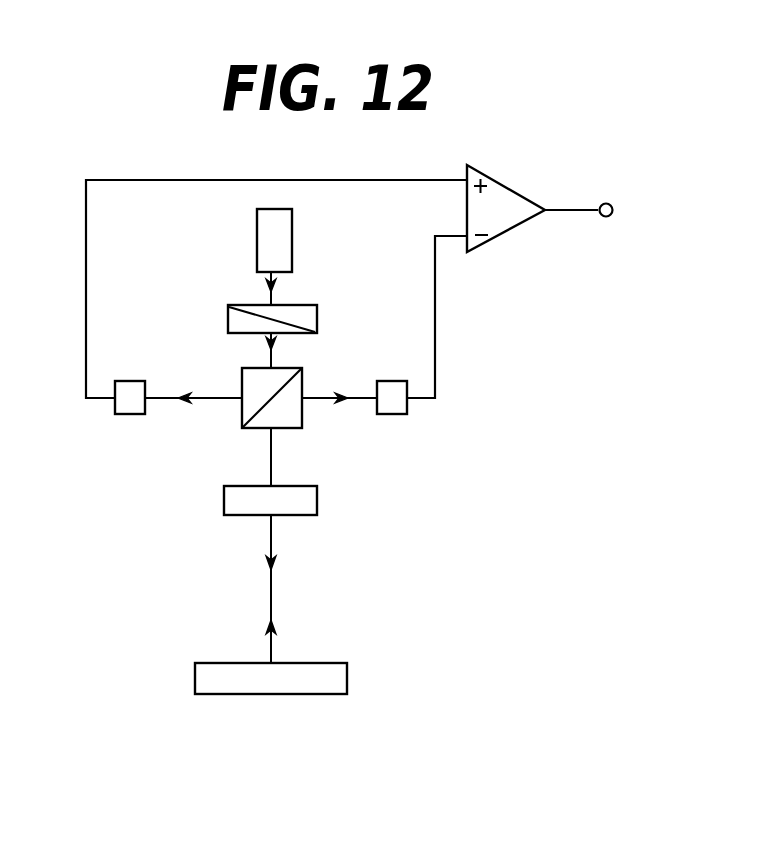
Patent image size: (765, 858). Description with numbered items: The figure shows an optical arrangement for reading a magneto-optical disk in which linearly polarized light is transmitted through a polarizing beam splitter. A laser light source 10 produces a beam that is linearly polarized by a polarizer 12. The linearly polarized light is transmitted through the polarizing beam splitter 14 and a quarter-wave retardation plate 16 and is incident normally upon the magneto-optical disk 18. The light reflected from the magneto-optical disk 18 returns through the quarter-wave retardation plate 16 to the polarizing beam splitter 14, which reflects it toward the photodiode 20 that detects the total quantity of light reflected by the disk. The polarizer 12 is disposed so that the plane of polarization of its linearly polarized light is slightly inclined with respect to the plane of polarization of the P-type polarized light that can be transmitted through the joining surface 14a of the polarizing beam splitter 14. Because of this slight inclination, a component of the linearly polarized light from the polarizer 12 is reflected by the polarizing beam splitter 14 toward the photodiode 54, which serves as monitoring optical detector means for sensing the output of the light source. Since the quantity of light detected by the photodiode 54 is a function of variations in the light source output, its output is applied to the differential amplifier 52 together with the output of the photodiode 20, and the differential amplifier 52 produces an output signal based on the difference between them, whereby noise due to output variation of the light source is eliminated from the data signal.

The laser light source 10 is at (267, 238).
The polarizer 12 is at (233, 320).
The polarizing beam splitter 14 is at (250, 380).
The joining surface 14a is at (255, 408).
The quarter-wave retardation plate 16 is at (238, 502).
The magneto-optical disk 18 is at (210, 678).
The photodiode 20 is at (397, 408).
The differential amplifier 52 is at (523, 253).
The photodiode 54 is at (128, 405).